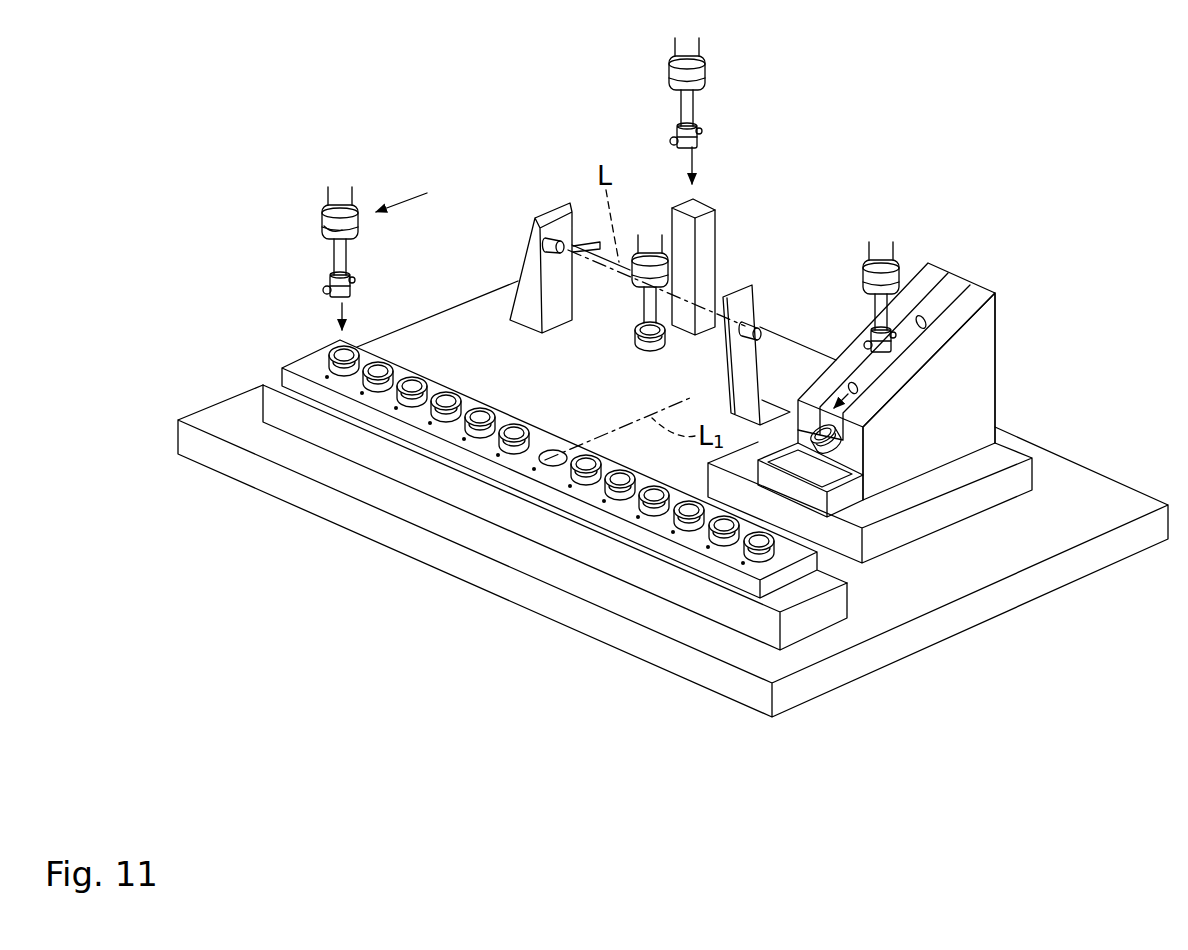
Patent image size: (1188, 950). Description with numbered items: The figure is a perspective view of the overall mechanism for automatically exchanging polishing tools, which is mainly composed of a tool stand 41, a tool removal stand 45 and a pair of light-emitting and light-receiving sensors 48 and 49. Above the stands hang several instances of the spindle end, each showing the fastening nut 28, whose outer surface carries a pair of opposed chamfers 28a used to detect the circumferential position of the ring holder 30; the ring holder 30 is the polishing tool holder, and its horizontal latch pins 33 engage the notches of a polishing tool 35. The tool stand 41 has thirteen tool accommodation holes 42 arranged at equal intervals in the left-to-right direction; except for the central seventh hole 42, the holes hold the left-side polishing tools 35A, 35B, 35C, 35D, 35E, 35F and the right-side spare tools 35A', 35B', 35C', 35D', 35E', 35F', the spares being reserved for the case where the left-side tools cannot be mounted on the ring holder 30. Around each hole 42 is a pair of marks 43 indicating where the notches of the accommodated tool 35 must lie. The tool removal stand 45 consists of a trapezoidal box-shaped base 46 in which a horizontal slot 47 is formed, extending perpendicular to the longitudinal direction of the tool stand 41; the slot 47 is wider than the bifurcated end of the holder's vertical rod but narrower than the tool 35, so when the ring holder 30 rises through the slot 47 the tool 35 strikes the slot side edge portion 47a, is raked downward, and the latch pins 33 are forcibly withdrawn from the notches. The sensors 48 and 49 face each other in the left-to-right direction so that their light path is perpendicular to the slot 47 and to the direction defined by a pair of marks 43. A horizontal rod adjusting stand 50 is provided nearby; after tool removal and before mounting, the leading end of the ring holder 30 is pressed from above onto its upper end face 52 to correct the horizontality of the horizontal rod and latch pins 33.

The fastening nut 28 is at (322, 213).
The chamfers 28a is at (324, 232).
The ring holder 30 is at (333, 262).
The horizontal latch pins 33 is at (354, 282).
The polishing tool 35 is at (642, 350).
The polishing tool 35A is at (247, 433).
The polishing tool 35B is at (290, 455).
The polishing tool 35C is at (338, 476).
The polishing tool 35D is at (381, 496).
The polishing tool 35E is at (428, 516).
The polishing tool 35F is at (474, 538).
The spare polishing tool 35A' is at (569, 575).
The spare polishing tool 35B' is at (615, 594).
The spare polishing tool 35C' is at (664, 615).
The spare polishing tool 35D' is at (710, 632).
The spare polishing tool 35E' is at (745, 650).
The spare polishing tool 35F' is at (787, 667).
The tool stand 41 is at (813, 616).
The tool accommodation holes 42 is at (326, 381).
The marks 43 is at (262, 388).
The tool removal stand 45 is at (1006, 318).
The trapezoidal box-shaped base 46 is at (971, 385).
The horizontal slot 47 is at (948, 288).
The slot side edge portion 47a is at (914, 318).
The light-emitting sensor 48 is at (538, 228).
The light-receiving sensor 49 is at (736, 297).
The horizontal rod adjusting stand 50 is at (718, 240).
The upper end face 52 is at (698, 211).